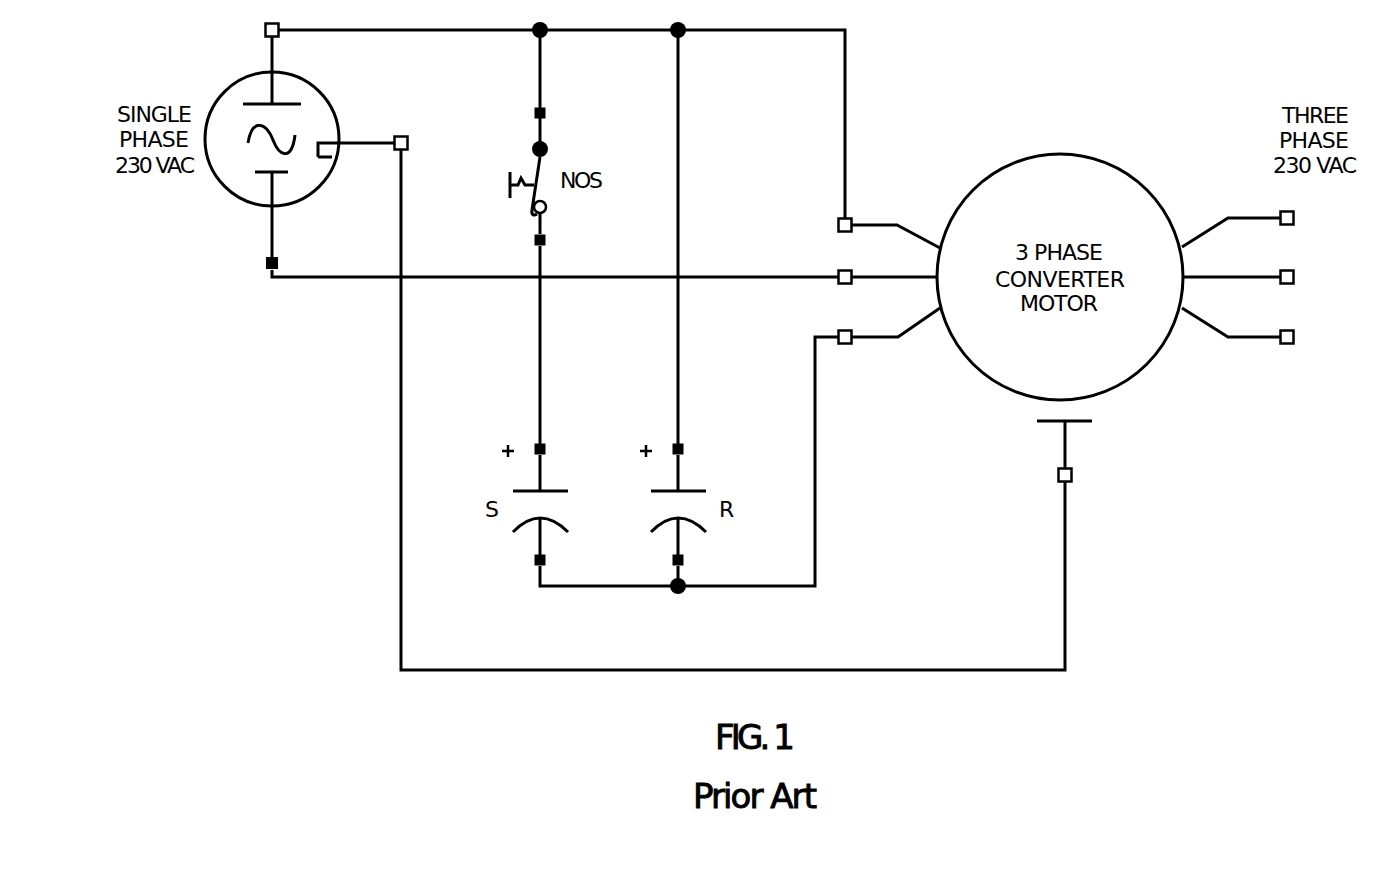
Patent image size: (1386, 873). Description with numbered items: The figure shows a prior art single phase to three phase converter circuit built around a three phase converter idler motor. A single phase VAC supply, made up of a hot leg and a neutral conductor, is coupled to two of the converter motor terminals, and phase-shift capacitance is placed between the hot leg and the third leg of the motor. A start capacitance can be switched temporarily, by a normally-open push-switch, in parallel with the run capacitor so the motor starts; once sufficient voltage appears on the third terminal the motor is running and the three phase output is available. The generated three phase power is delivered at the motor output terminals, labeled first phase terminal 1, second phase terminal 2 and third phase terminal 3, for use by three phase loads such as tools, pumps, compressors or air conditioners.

The first phase output terminal (1 P) 1 is at (1257, 226).
The second phase output terminal (2 P) 2 is at (1257, 276).
The third phase output terminal (3 P) 3 is at (1257, 328).